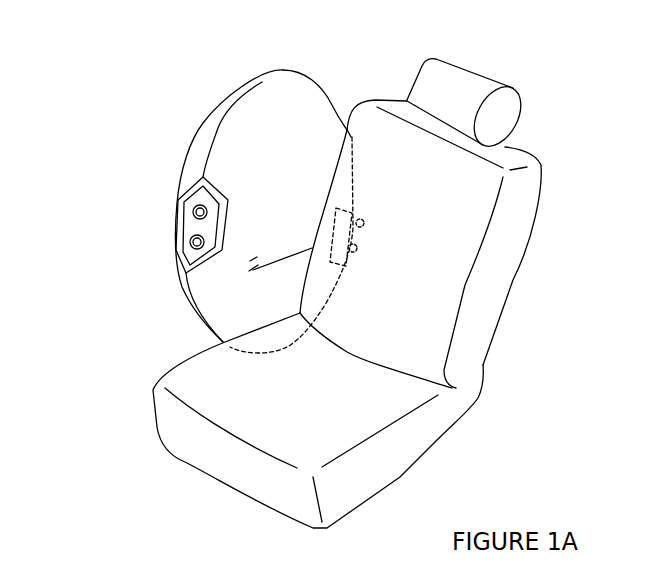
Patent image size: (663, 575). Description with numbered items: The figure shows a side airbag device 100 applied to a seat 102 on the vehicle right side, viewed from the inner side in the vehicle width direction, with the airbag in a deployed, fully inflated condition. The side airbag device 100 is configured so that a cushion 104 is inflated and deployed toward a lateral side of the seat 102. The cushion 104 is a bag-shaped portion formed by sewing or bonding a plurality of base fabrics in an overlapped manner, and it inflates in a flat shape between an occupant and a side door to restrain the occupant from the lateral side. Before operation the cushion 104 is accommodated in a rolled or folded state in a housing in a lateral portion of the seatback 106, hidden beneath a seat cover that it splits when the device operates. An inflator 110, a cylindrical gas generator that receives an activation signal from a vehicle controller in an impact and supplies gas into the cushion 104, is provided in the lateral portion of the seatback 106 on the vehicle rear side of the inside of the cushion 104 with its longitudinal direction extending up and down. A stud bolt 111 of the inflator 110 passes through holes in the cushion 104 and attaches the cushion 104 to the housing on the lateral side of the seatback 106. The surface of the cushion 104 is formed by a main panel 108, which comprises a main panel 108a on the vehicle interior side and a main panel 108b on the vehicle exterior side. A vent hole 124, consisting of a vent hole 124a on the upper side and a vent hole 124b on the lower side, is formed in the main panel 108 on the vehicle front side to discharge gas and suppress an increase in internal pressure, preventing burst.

The side airbag device 100 is at (166, 38).
The seat 102 is at (487, 75).
The cushion 104 is at (282, 70).
The seatback 106 is at (525, 152).
The main panel 108 is at (103, 110).
The main panel on the vehicle interior side 108a is at (247, 140).
The main panel on the vehicle exterior side 108b is at (218, 122).
The inflator 110 is at (353, 242).
The stud bolt 111 is at (356, 220).
The vent hole 124 is at (91, 200).
The vent hole on the upper side 124a is at (192, 212).
The vent hole on the lower side 124b is at (190, 243).